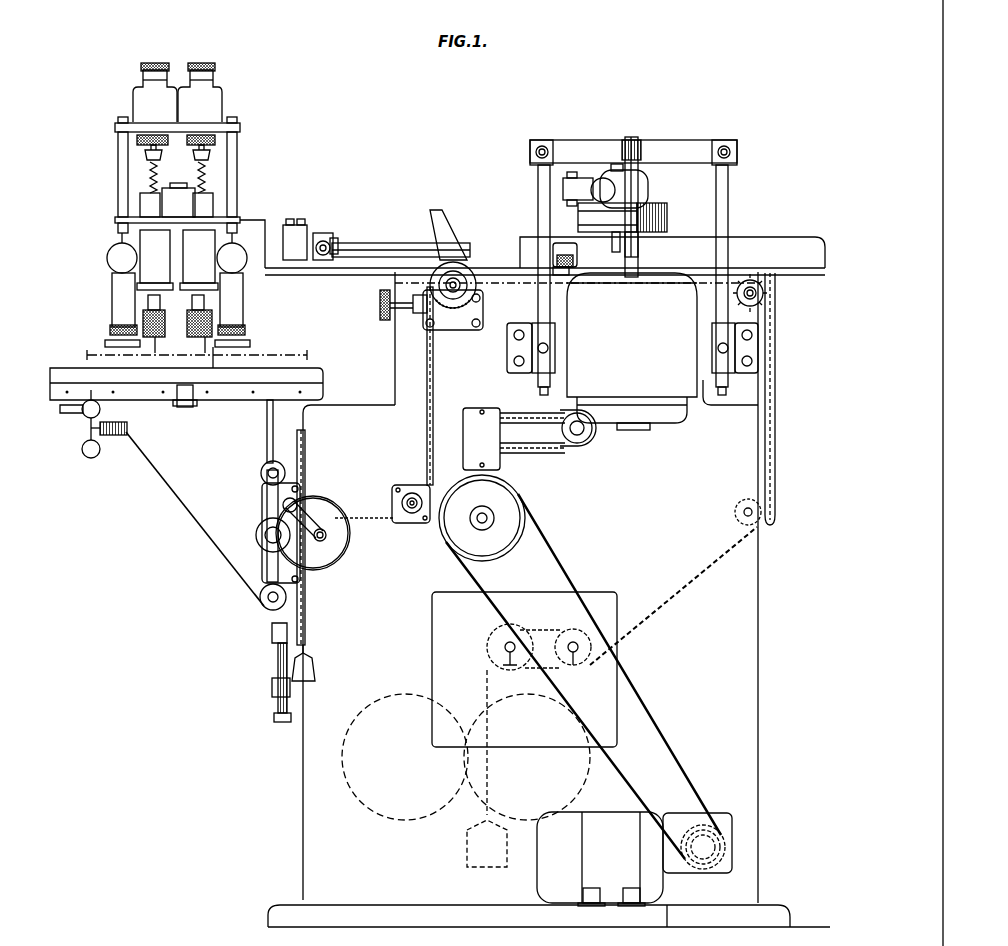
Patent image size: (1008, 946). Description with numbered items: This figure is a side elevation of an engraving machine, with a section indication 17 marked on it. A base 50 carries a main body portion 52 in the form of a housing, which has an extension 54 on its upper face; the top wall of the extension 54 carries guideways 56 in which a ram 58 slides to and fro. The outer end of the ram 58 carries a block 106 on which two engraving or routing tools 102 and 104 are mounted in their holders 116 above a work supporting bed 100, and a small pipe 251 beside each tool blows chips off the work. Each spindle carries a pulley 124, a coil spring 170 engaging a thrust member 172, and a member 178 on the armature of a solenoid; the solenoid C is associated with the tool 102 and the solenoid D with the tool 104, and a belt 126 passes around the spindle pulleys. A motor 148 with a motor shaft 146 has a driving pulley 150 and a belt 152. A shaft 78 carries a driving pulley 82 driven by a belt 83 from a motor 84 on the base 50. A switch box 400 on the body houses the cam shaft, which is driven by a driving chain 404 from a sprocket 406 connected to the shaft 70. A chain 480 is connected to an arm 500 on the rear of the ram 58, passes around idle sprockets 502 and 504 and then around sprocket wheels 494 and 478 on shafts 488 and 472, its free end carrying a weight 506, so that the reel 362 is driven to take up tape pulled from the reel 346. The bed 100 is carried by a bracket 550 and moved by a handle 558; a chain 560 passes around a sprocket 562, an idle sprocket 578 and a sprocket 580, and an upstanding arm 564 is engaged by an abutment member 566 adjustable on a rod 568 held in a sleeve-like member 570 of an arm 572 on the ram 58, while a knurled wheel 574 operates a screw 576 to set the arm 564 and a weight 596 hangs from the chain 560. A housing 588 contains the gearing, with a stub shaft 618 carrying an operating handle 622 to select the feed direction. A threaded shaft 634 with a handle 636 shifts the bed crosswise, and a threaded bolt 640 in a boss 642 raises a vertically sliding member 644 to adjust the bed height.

The solenoid D is at (140, 105).
The solenoid C is at (220, 105).
The section line / filling head frame 17 is at (126, 191).
The member 178 is at (137, 140).
The thrust member 172 is at (147, 156).
The coil spring 170 is at (206, 180).
The pulley 124 is at (213, 198).
The belt 126 is at (140, 205).
The block 106 is at (130, 240).
The nozzle chuck 116 is at (143, 302).
The engraving or routing tool 104 is at (156, 348).
The engraving or routing tool 102 is at (236, 348).
The pipe 251 is at (105, 345).
The work supporting bed 100 is at (300, 377).
The handle 636 is at (84, 430).
The threaded shaft 634 is at (124, 435).
The bracket 550 is at (170, 485).
The handle 558 is at (258, 527).
The sprocket 580 is at (345, 545).
The housing 588 is at (320, 498).
The operating handle 622 is at (300, 508).
The stub shaft 618 is at (325, 542).
The chain 560 is at (305, 613).
The vertically sliding member 644 is at (272, 632).
The threaded bolt 640 is at (278, 660).
The weight 596 is at (315, 672).
The boss 642 is at (272, 688).
The arm 572 is at (291, 225).
The sleeve-like member 570 is at (318, 240).
The abutment member 566 is at (338, 240).
The rod 568 is at (385, 243).
The upstanding arm 564 is at (436, 210).
The ram 58 is at (462, 262).
The sprocket 562 is at (468, 290).
The screw 576 is at (455, 322).
The knurled wheel 574 is at (383, 320).
The idle sprocket 578 is at (410, 485).
The extension 54 is at (577, 338).
The guideway 56 is at (498, 268).
The main body portion 52 is at (303, 822).
The base 50 is at (500, 915).
The motor shaft 146 is at (632, 137).
The driving pulley 150 is at (650, 200).
The belt 152 is at (666, 218).
The arm 500 is at (570, 280).
The motor 148 is at (632, 351).
The idle sprocket 502 is at (765, 296).
The driving chain 480 is at (775, 428).
The idle sprocket 504 is at (735, 512).
The reel 346 is at (620, 762).
The switch box 400 is at (486, 430).
The driving chain 404 is at (530, 455).
The shaft 70 is at (593, 435).
The sprocket 406 is at (587, 448).
The driving pulley 82 is at (502, 500).
The shaft 78 is at (475, 530).
The belt 83 is at (558, 545).
The motor 84 is at (634, 859).
The sprocket wheel 478 is at (492, 632).
The shaft 472 is at (510, 665).
The sprocket wheel 494 is at (565, 630).
The shaft 488 is at (573, 665).
The weight 506 is at (458, 862).
The reel 362 is at (378, 810).